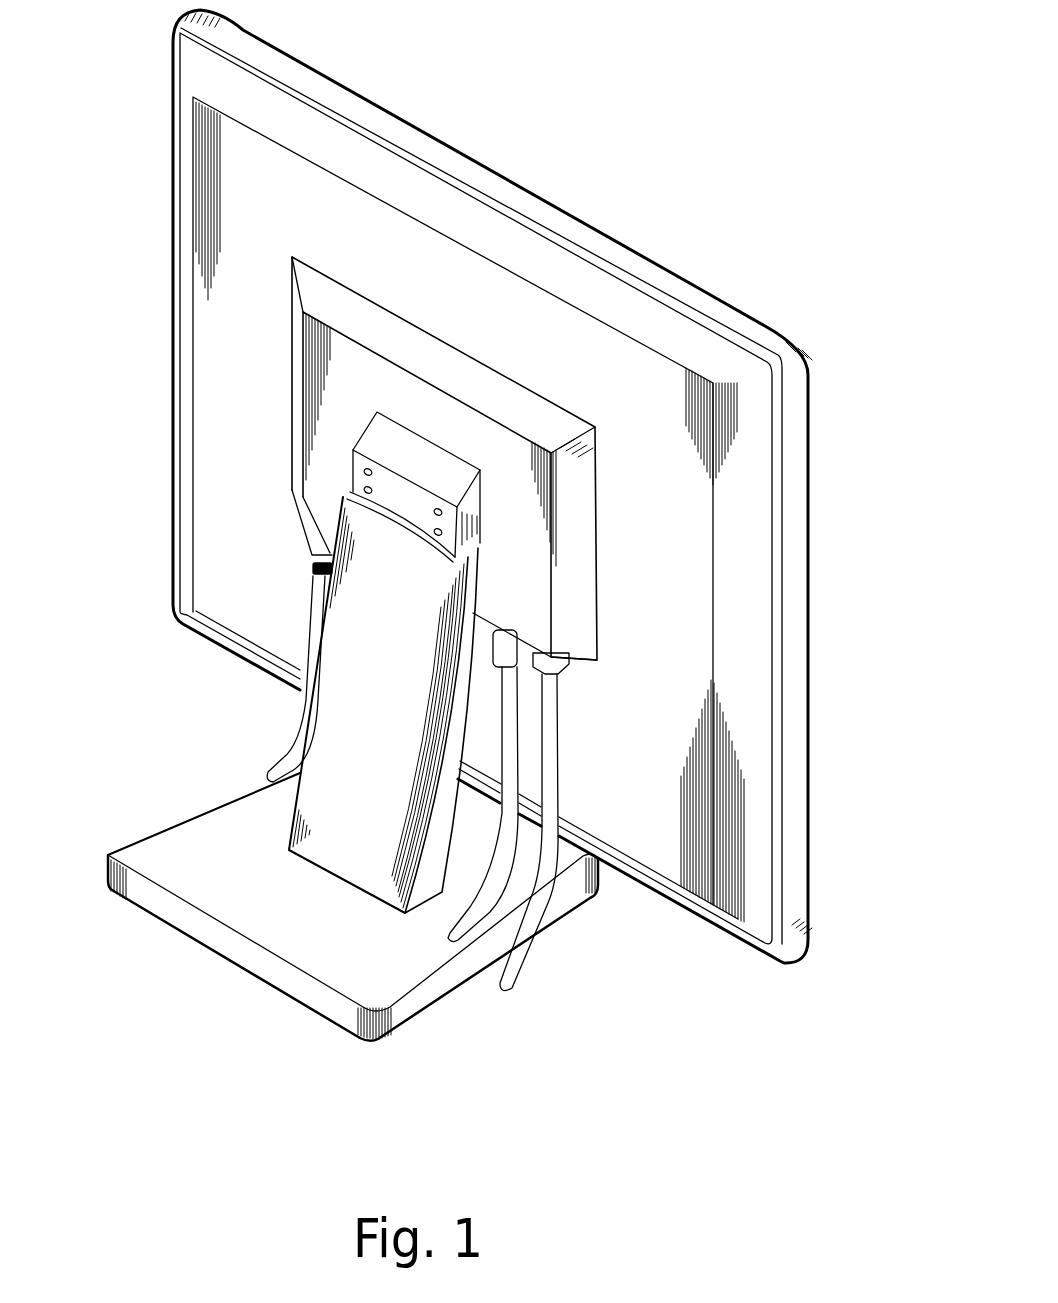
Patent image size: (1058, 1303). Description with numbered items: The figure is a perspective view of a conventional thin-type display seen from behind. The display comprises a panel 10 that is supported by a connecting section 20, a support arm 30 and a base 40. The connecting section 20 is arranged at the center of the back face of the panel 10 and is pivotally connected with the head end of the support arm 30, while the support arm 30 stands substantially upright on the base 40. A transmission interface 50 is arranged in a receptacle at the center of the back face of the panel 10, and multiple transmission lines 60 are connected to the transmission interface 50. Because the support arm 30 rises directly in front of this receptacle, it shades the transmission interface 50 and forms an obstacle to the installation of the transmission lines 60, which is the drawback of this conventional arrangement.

The panel 10 is at (668, 328).
The connecting section 20 is at (357, 428).
The support arm 30 is at (325, 848).
The base 40 is at (383, 981).
The transmission interface 50 is at (305, 527).
The transmission lines 60 is at (297, 742).